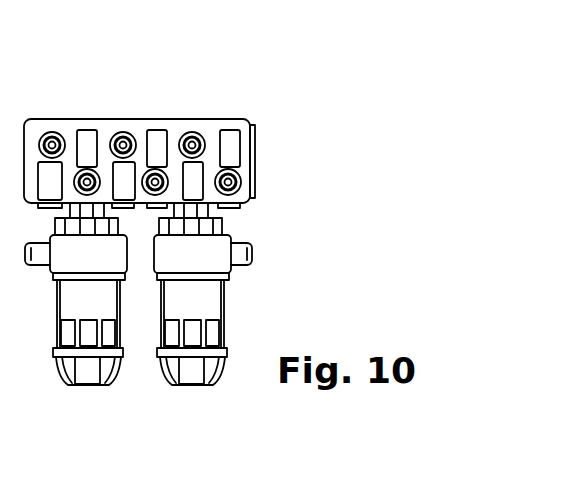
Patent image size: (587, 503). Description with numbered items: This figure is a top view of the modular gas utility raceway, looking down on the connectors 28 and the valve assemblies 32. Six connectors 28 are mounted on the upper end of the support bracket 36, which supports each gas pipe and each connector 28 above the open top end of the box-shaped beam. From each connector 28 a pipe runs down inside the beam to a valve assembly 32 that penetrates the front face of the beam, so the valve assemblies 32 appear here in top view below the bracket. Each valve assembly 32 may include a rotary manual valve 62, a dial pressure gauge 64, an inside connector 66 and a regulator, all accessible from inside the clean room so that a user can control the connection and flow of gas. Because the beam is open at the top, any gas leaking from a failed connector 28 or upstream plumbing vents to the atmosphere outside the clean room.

The connector 28 is at (86, 176).
The support bracket 36 is at (252, 123).
The dial pressure gauge 64 is at (202, 248).
The inside connector 66 is at (244, 250).
The rotary manual valve 62 is at (229, 325).
The valve assembly 32 is at (107, 367).